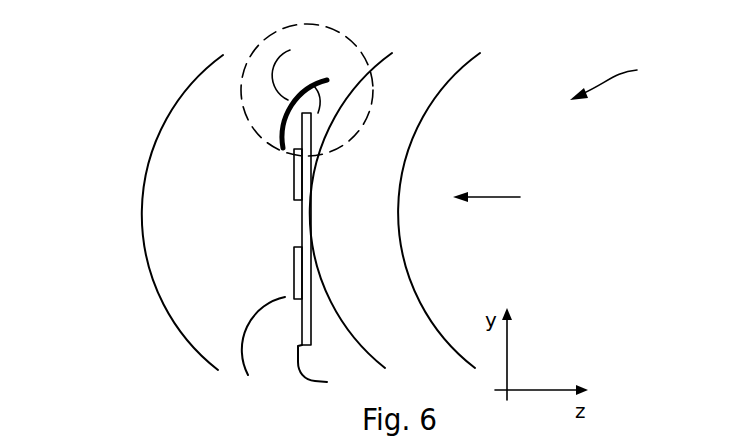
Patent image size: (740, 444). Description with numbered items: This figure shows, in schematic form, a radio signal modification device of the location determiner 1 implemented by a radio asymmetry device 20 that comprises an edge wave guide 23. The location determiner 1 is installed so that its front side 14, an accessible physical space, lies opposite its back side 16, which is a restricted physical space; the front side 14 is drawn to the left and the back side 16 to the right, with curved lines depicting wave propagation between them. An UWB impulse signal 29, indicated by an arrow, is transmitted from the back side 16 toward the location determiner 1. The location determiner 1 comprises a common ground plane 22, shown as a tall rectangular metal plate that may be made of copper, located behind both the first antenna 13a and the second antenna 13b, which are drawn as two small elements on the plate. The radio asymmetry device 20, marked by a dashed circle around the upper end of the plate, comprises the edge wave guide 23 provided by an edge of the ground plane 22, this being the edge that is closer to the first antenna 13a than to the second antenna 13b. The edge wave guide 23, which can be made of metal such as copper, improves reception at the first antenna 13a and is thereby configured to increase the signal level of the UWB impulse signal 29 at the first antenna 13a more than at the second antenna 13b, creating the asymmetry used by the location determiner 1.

The location determiner 1 is at (612, 76).
The first antenna 13a is at (294, 188).
The second antenna 13b is at (294, 280).
The front side 14 is at (68, 255).
The back side 16 is at (655, 228).
The radio asymmetry device 20 is at (253, 128).
The common ground plane 22 is at (312, 217).
The edge wave guide 23 is at (300, 90).
The UWB impulse signal 29 is at (502, 199).